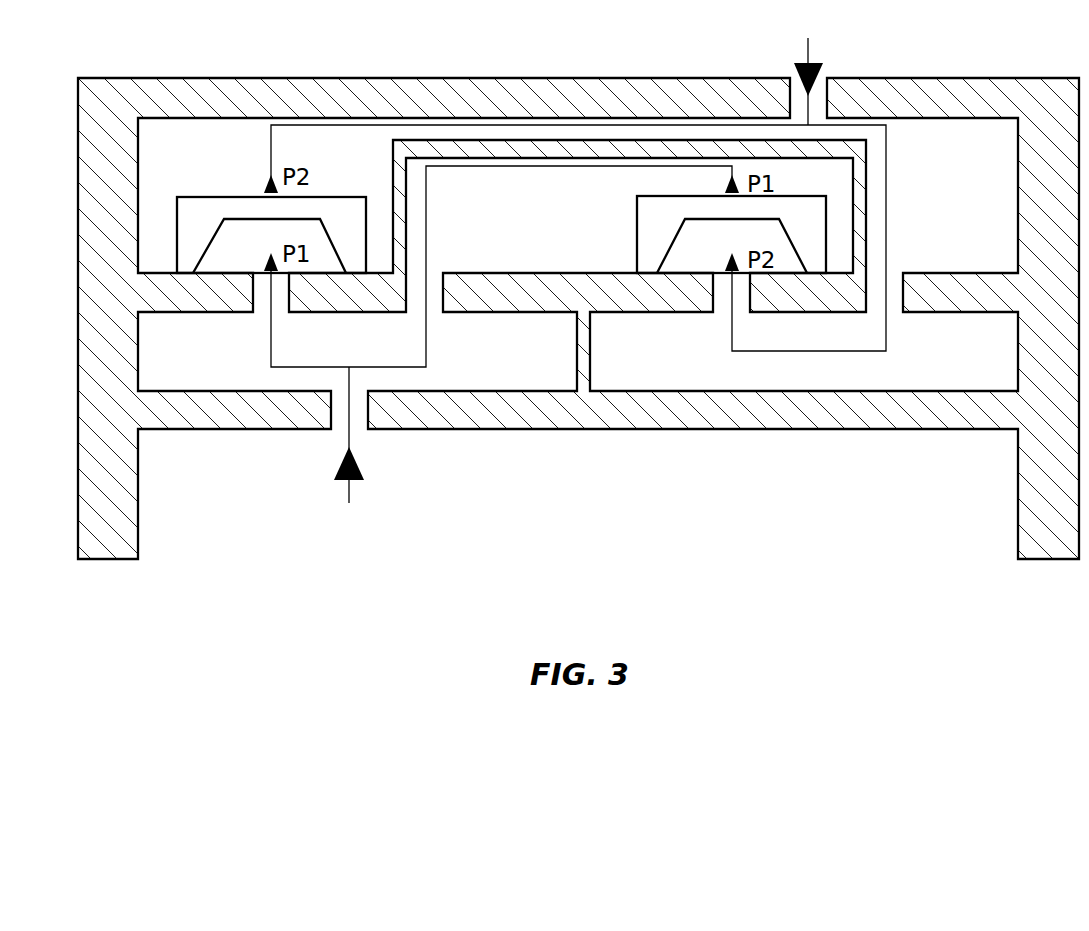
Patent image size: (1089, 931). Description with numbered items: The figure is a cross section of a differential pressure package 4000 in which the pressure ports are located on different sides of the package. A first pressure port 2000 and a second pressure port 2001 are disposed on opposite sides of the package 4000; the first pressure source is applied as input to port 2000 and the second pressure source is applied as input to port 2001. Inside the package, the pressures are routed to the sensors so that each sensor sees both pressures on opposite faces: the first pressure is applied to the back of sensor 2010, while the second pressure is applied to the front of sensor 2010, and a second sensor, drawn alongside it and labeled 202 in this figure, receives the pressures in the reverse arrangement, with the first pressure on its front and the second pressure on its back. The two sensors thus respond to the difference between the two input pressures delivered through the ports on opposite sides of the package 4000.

The differential pressure package 4000 is at (608, 575).
The sensor 2010 is at (248, 197).
The second valve body 202 is at (637, 225).
The pressure port 2001 is at (821, 92).
The pressure port 2000 is at (364, 424).